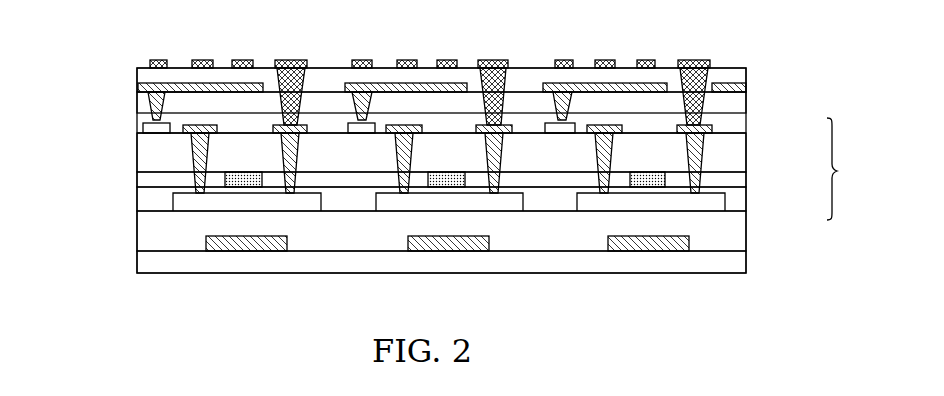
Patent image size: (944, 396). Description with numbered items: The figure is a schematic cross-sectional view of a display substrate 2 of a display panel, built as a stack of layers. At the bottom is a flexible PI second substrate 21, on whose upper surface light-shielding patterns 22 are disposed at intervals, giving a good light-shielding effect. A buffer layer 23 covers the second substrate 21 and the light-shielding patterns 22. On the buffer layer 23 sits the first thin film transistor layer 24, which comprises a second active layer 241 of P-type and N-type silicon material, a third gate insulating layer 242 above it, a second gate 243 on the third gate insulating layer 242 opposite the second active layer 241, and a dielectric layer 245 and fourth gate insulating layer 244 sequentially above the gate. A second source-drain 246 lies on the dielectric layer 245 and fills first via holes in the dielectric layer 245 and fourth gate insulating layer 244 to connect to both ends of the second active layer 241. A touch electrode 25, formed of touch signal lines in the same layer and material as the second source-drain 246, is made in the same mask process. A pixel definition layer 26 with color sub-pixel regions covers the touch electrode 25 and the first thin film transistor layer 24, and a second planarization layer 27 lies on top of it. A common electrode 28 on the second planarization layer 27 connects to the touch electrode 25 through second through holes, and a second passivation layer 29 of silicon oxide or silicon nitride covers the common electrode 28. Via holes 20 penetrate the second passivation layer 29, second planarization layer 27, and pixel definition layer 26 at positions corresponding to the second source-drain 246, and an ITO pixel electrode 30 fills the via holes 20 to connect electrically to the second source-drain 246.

The display substrate 2 is at (152, 34).
The via holes 20 is at (286, 102).
The second substrate 21 is at (728, 268).
The light-shielding patterns 22 is at (688, 252).
The buffer layer 23 is at (732, 237).
The first thin film transistor layer 24 is at (844, 169).
The second active layer 241 is at (707, 197).
The third gate insulating layer 242 is at (730, 210).
The second gate 243 is at (663, 183).
The fourth gate insulating layer 244 is at (727, 181).
The dielectric layer 245 is at (727, 153).
The second source-drain 246 is at (746, 125).
The touch electrode 25 is at (572, 115).
The pixel definition layer 26 is at (182, 122).
The second planarization layer 27 is at (150, 105).
The common electrode 28 is at (150, 87).
The second passivation layer 29 is at (152, 75).
The pixel electrode 30 is at (283, 60).